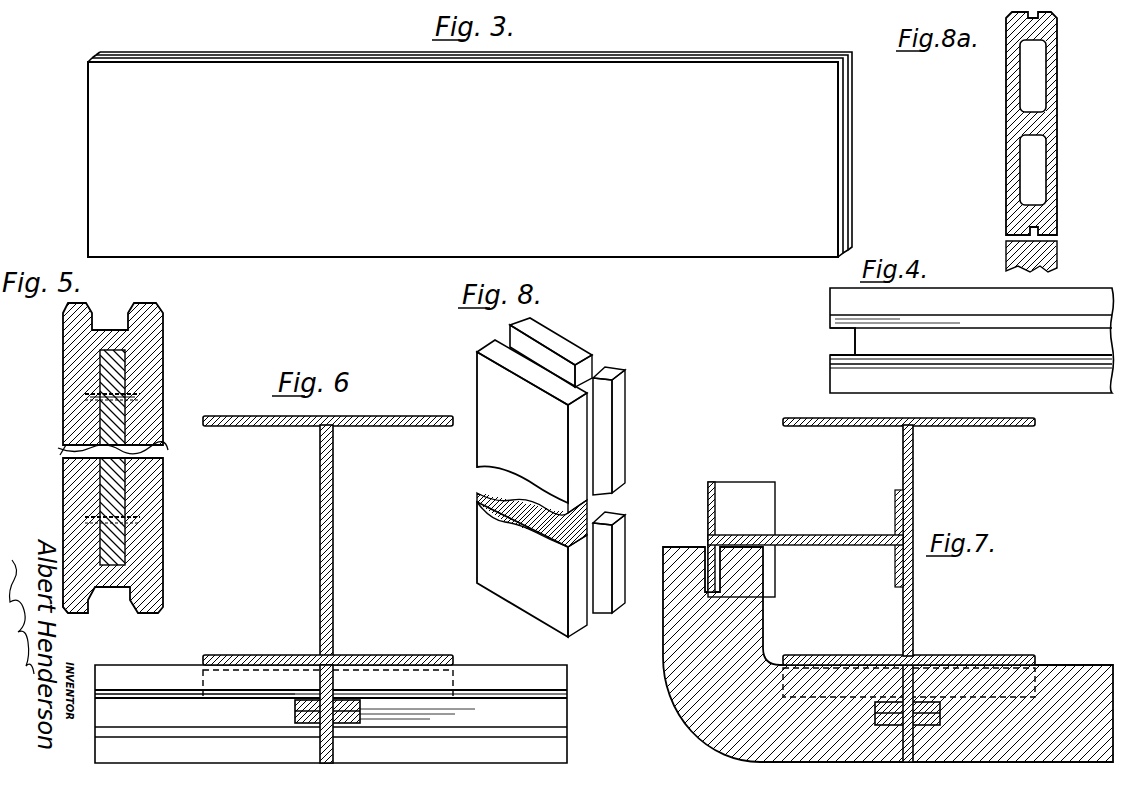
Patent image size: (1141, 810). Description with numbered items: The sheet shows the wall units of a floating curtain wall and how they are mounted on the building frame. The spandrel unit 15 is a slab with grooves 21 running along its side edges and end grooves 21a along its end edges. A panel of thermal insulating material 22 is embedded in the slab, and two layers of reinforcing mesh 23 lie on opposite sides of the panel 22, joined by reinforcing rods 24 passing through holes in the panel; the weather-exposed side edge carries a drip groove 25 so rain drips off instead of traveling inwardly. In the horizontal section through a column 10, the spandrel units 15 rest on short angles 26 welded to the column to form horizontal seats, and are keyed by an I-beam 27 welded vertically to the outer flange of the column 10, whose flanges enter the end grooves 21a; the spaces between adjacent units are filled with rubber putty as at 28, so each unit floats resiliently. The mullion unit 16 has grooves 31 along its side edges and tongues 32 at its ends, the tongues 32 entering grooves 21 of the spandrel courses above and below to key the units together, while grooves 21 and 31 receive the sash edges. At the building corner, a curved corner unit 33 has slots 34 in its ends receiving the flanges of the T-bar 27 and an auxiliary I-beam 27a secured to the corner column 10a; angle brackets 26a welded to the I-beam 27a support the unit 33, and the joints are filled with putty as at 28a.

In FIG. 6, the column 10 is at (334, 528).
In FIG. 7, the corner column 10a is at (913, 601).
In FIG. 3, the spandrel unit 15 is at (492, 139).
In FIG. 5, the spandrel unit 15 is at (66, 449).
In FIG. 6, the spandrel unit 15 is at (175, 752).
In FIG. 7, the spandrel unit 15 is at (1038, 752).
In FIG. 8, the mullion unit 16 is at (532, 488).
In FIG. 3, the groove 21 is at (660, 58).
In FIG. 8A, the groove 21 is at (1031, 142).
In FIG. 5, the groove 21 is at (113, 322).
In FIG. 6, the groove 21 is at (452, 718).
In FIG. 4, the groove 21 is at (1025, 337).
In FIG. 3, the end groove 21a is at (850, 162).
In FIG. 6, the end groove 21a is at (297, 714).
In FIG. 4, the end groove 21a is at (845, 345).
In FIG. 5, the panel of thermal insulating material 22 is at (116, 367).
In FIG. 5, the reinforcing mesh 23 is at (146, 381).
In FIG. 5, the reinforcing rod 24 is at (100, 395).
In FIG. 5, the drip groove 25 is at (78, 607).
In FIG. 6, the angle 26 is at (455, 670).
In FIG. 7, the angle 26 is at (1030, 673).
In FIG. 7, the angle bracket 26a is at (742, 492).
In FIG. 6, the T-bar or I-beam 27 is at (318, 660).
In FIG. 7, the T-bar or I-beam 27 is at (918, 660).
In FIG. 7, the auxiliary I-beam 27a is at (826, 535).
In FIG. 6, the Plastikon filling 28 is at (328, 765).
In FIG. 7, the Plastikon filling 28a is at (908, 760).
In FIG. 8, the groove 31 is at (595, 443).
In FIG. 8, the tongue 32 is at (562, 345).
In FIG. 7, the corner unit 33 is at (705, 704).
In FIG. 7, the slot 34 is at (706, 552).